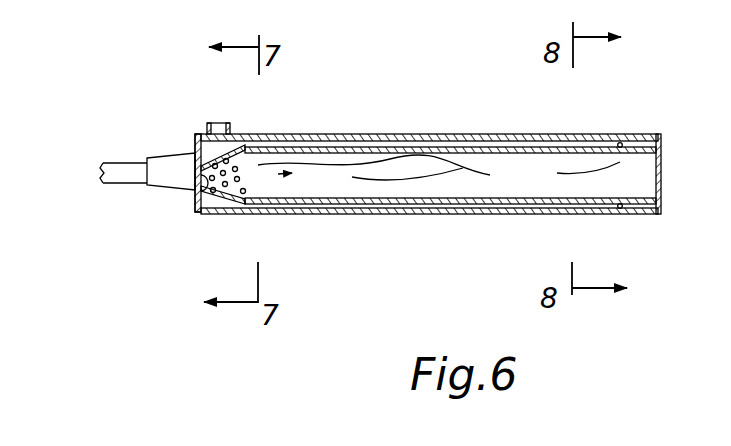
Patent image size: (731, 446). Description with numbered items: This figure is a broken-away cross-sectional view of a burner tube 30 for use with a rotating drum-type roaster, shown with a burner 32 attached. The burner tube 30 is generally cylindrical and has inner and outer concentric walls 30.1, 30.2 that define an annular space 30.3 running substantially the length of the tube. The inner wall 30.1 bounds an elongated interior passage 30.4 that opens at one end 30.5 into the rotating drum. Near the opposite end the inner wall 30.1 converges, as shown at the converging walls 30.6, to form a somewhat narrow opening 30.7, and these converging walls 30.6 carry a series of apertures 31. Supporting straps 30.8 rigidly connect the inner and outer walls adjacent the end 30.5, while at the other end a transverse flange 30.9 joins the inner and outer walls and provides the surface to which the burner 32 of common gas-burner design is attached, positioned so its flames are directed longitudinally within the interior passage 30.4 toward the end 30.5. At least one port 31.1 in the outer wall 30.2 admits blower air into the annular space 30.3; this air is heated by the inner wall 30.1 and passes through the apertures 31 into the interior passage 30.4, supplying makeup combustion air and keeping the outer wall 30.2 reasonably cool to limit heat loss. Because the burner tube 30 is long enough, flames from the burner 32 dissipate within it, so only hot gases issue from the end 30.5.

The burner tube 30 is at (372, 131).
The inner wall 30.1 is at (383, 198).
The outer wall 30.2 is at (437, 209).
The annular space 30.3 is at (437, 146).
The interior passage 30.4 is at (546, 184).
The end 30.5 is at (661, 178).
The converging walls 30.6 is at (225, 194).
The narrow opening 30.7 is at (197, 189).
The supporting straps 30.8 is at (623, 146).
The transverse flange 30.9 is at (193, 135).
The apertures 31 is at (240, 170).
The port 31.1 is at (217, 124).
The burner 32 is at (168, 163).